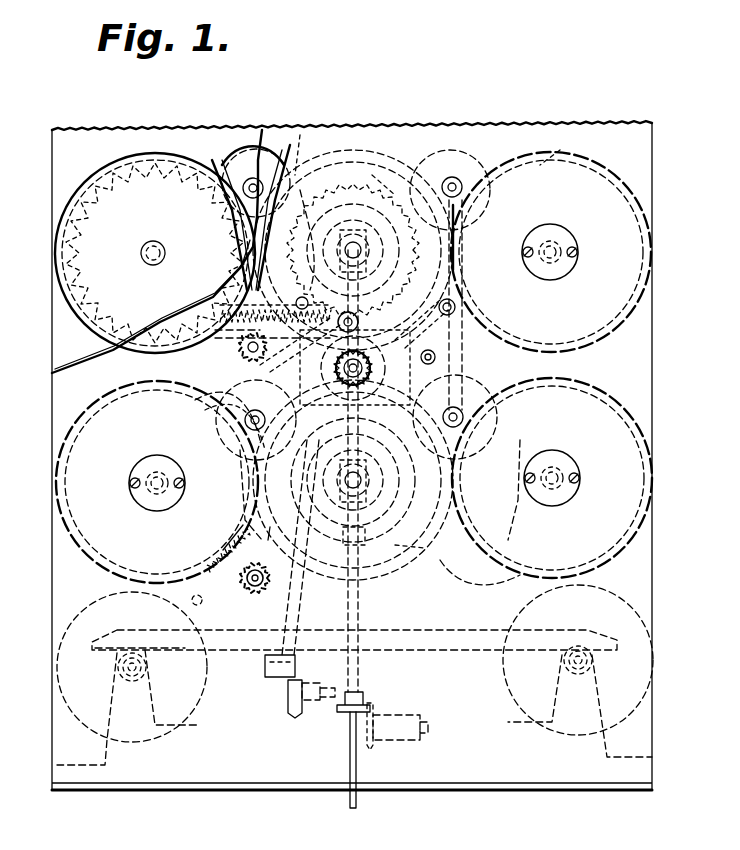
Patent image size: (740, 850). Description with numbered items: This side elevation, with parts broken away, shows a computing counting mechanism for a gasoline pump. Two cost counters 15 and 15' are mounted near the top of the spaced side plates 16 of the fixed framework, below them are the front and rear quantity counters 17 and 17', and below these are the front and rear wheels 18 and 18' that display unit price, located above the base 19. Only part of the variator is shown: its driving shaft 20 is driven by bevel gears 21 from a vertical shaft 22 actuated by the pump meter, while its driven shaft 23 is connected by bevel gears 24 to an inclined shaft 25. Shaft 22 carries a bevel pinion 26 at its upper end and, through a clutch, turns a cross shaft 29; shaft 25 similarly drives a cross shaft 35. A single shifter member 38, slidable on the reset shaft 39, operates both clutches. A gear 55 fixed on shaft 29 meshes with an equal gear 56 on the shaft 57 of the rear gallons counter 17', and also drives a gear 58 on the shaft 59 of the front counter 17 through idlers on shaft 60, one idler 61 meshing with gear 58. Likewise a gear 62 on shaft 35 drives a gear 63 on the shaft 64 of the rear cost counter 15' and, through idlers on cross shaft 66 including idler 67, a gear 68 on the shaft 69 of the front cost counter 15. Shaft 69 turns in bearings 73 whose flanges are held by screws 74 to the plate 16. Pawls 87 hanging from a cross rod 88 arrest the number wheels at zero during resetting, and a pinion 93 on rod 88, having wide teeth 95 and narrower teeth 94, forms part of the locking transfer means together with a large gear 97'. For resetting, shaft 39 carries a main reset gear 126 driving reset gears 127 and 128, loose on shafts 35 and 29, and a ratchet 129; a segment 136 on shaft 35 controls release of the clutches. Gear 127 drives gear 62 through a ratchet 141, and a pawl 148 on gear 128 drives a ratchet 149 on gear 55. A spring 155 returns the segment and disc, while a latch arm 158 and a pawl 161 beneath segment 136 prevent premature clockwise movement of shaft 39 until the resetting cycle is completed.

The cost counter 15 is at (136, 253).
The cost counter 15' is at (574, 252).
The side plates 16 is at (132, 130).
The quantity counter 17 is at (136, 482).
The quantity counter 17' is at (574, 478).
The wheel 18 is at (110, 678).
The wheel 18' is at (597, 668).
The base 19 is at (655, 788).
The driving shaft 20 is at (420, 724).
The bevel gears 21 is at (374, 702).
The vertical shaft 22 is at (368, 768).
The driven shaft 23 is at (296, 714).
The bevel gears 24 is at (278, 682).
The inclined shaft 25 is at (304, 618).
The bevel pinion 26 is at (340, 548).
The cross shaft 29 is at (362, 480).
The cross shaft 35 is at (362, 250).
The shifter member 38 is at (315, 229).
The shaft 39 is at (353, 382).
The gear 55 is at (398, 578).
The gear 56 is at (505, 577).
The shaft 57 is at (535, 500).
The gear 58 is at (225, 565).
The shaft 59 is at (142, 500).
The shaft 60 is at (226, 545).
The idler 61 is at (245, 648).
The gear 62 is at (372, 175).
The gear 63 is at (562, 150).
The shaft 64 is at (552, 250).
The cross shaft 66 is at (204, 416).
The idler 67 is at (216, 427).
The gear 68 is at (228, 285).
The shaft 69 is at (145, 250).
The bearings 73 is at (568, 275).
The screws 74 is at (577, 252).
The pawl 87 is at (238, 482).
The cross rod 88 is at (275, 118).
The pinion 93 is at (302, 130).
The teeth 94 is at (220, 148).
The teeth 95 is at (250, 135).
The toothed ring 97' is at (155, 253).
The main reset gear 126 is at (436, 358).
The reset gear 127 is at (353, 250).
The reset gear 128 is at (430, 548).
The ratchet 129 is at (314, 351).
The segment 136 is at (369, 250).
The ratchet 141 is at (353, 250).
The pawl 148 is at (372, 528).
The ratchet 149 is at (395, 485).
The spring 155 is at (213, 297).
The latch arm 158 is at (428, 346).
The pawl 161 is at (477, 305).